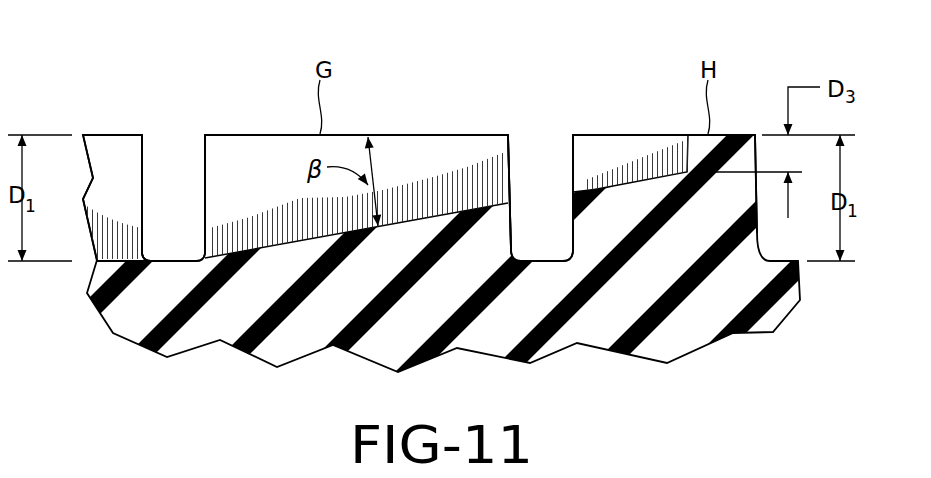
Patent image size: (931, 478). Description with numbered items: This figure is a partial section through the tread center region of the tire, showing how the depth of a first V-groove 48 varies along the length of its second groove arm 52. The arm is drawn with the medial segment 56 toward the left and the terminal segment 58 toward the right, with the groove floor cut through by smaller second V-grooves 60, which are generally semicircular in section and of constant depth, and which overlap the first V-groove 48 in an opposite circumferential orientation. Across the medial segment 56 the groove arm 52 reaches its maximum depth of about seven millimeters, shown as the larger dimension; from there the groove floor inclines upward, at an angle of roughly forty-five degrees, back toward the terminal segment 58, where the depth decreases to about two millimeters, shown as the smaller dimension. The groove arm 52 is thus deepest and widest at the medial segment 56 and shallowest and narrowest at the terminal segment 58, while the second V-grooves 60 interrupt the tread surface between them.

The first V-groove 48 is at (412, 125).
The second groove arm 52 is at (270, 165).
The medial segment 56 is at (108, 133).
The terminal segment 58 is at (636, 130).
The second V-groove 60 is at (173, 196).